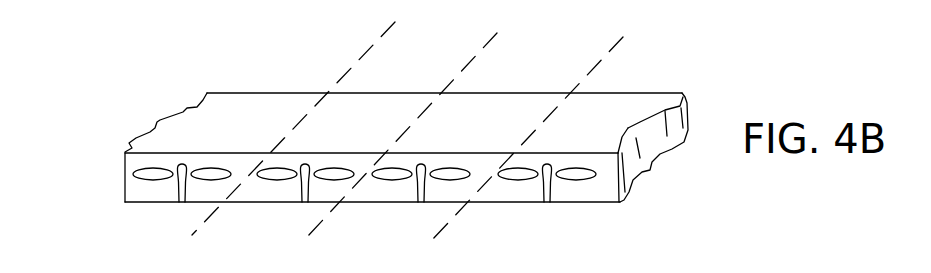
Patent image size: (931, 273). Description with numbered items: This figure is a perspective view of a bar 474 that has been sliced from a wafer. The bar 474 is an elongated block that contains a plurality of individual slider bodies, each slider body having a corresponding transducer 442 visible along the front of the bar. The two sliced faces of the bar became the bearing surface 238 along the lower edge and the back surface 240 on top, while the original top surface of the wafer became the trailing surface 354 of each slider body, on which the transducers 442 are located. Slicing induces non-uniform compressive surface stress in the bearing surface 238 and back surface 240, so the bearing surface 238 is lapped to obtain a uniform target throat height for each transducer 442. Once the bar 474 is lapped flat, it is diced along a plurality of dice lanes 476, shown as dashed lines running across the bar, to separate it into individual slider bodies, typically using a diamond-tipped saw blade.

The bar 474 is at (641, 73).
The back surface 240 is at (155, 138).
The trailing surface 354 is at (138, 190).
The bearing surface 238 is at (133, 207).
The transducer 442 is at (181, 203).
The dice lanes 476 is at (362, 53).